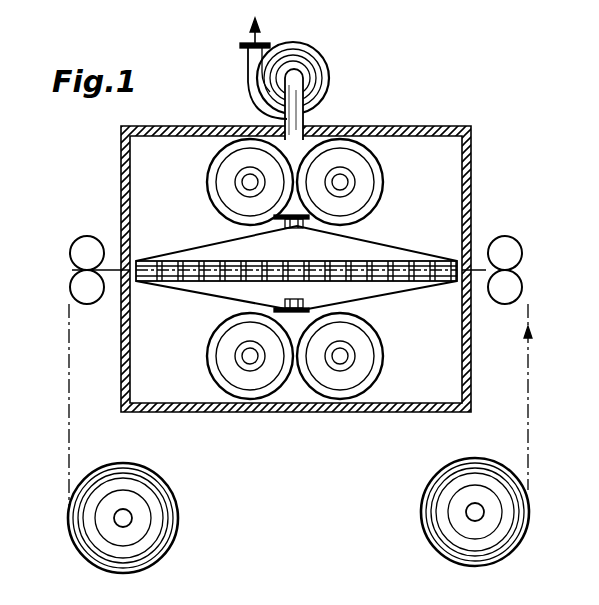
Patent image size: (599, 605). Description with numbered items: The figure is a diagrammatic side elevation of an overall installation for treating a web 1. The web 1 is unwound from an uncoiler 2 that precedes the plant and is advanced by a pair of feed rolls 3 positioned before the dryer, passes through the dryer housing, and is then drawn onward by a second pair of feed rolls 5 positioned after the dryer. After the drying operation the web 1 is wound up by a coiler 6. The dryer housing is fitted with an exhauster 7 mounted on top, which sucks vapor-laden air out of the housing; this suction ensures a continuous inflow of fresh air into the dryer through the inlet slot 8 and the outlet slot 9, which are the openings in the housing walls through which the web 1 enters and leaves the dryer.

The web 1 is at (70, 435).
The uncoiler 2 is at (88, 532).
The pair of feed rolls 3 is at (78, 291).
The pair of feed rolls 5 is at (516, 286).
The coiler 6 is at (508, 521).
The exhauster 7 is at (306, 92).
The inlet slot 8 is at (120, 268).
The outlet slot 9 is at (473, 268).